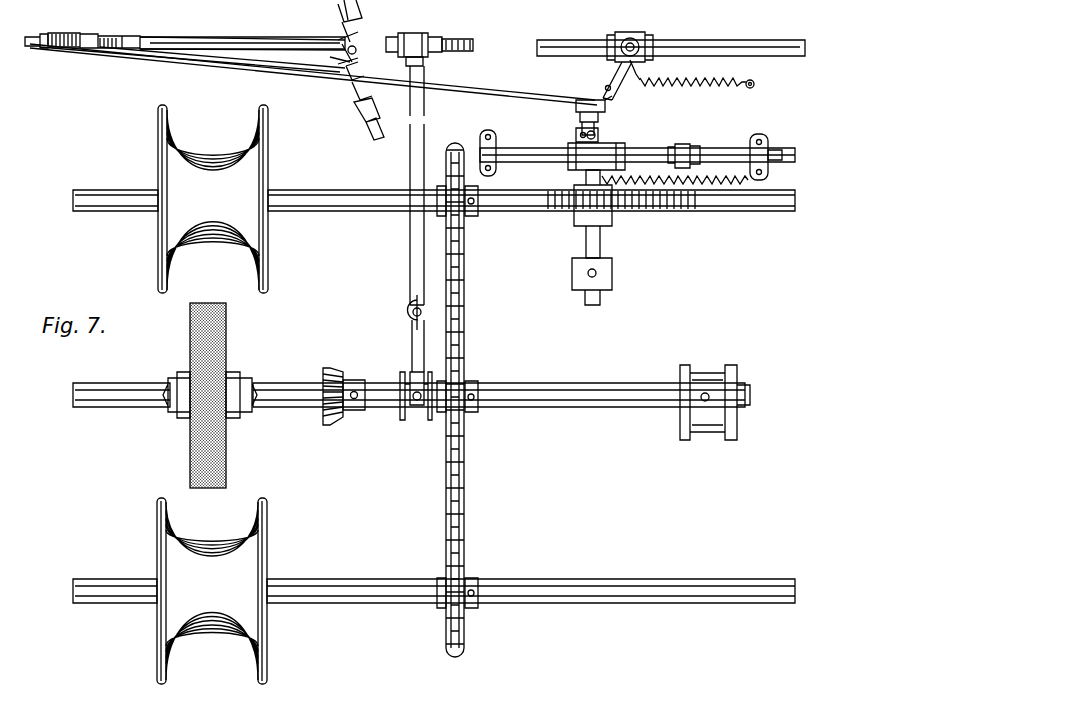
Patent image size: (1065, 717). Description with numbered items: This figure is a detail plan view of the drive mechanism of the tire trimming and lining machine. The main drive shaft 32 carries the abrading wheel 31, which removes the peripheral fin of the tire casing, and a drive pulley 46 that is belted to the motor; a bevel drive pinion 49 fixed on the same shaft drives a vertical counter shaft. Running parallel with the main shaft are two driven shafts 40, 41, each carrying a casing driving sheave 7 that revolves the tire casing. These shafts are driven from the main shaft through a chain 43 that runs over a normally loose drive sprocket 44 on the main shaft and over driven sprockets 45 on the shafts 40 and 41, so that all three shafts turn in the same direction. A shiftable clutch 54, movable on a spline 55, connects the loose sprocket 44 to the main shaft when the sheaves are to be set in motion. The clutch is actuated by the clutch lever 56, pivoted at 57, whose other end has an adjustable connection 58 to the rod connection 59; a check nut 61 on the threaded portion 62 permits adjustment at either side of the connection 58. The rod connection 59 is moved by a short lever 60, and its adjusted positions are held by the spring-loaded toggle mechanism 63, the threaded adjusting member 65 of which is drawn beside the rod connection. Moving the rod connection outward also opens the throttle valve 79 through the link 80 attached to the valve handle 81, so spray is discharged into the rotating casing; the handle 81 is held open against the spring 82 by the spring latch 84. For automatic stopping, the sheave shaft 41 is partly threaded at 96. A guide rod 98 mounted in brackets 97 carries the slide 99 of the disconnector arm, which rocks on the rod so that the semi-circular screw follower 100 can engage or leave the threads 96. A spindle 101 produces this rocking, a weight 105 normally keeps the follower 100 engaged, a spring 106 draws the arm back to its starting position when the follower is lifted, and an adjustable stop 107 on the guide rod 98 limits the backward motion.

The casing driving sheave 7 is at (270, 250).
The abrading wheel 31 is at (228, 350).
The main drive shaft 32 is at (580, 398).
The driven shaft 40 is at (548, 598).
The driven shaft 41 is at (332, 200).
The chain 43 is at (466, 318).
The drive sprocket 44 is at (440, 414).
The driven sprocket 45 is at (449, 148).
The drive pulley 46 is at (730, 440).
The bevel drive pinion 49 is at (336, 426).
The shiftable clutch 54 is at (412, 418).
The spline 55 is at (398, 392).
The clutch lever 56 is at (410, 243).
The pivot 57 is at (412, 313).
The adjustable connection 58 is at (420, 36).
The rod connection 59 is at (274, 38).
The short lever 60 is at (72, 38).
The check nut 61 is at (408, 62).
The threaded portion 62 is at (462, 48).
The toggle mechanism 63 is at (332, 62).
The adjusting screw 65 is at (356, 42).
The throttle valve 79 is at (636, 42).
The link 80 is at (494, 88).
The handle 81 is at (630, 88).
The spring 82 is at (680, 86).
The spring latch 84 is at (576, 104).
The threaded portion 96 is at (665, 212).
The brackets 97 is at (770, 158).
The guide rod 98 is at (532, 160).
The slide 99 is at (610, 152).
The semi-circular screw follower 100 is at (574, 214).
The spindle 101 is at (600, 134).
The weight 105 is at (614, 274).
The spring 106 is at (712, 178).
The adjustable stop 107 is at (690, 146).